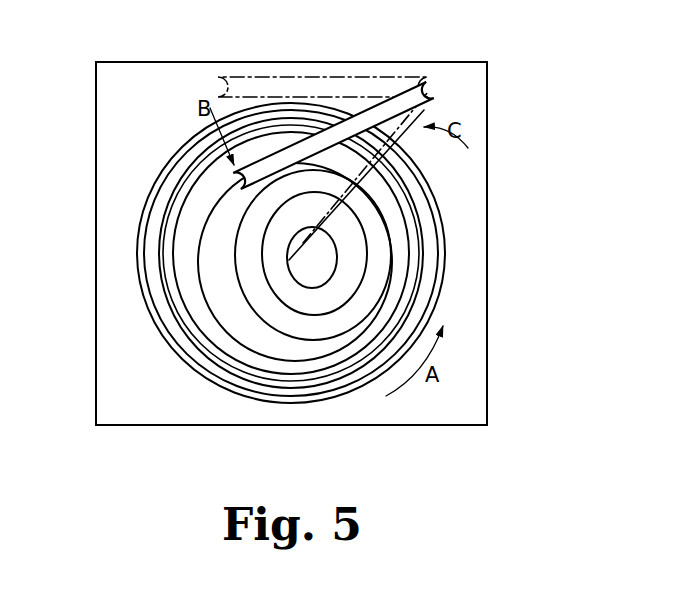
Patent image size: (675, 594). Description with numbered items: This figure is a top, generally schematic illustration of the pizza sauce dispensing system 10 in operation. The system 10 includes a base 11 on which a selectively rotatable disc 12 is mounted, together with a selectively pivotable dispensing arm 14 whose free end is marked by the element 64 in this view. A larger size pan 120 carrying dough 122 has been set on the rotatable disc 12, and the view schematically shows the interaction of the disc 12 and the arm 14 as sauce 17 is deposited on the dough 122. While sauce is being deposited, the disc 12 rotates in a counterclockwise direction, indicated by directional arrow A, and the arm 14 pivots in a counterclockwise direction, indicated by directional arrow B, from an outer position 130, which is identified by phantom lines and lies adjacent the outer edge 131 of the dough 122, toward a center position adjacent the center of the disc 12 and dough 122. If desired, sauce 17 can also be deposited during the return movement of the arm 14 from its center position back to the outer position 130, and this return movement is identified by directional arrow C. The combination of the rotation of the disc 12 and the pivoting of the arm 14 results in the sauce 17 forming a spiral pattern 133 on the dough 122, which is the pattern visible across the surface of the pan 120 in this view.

The pizza sauce dispensing system 10 is at (511, 147).
The base 11 is at (487, 352).
The rotatable disc 12 is at (447, 250).
The dispensing arm 14 is at (403, 87).
The sauce 17 is at (197, 259).
The arm end roller 64 is at (228, 182).
The pan 120 is at (311, 379).
The dough 122 is at (347, 358).
The outer position 130 is at (315, 78).
The outer edge 131 is at (290, 248).
The spiral pattern 133 is at (222, 316).